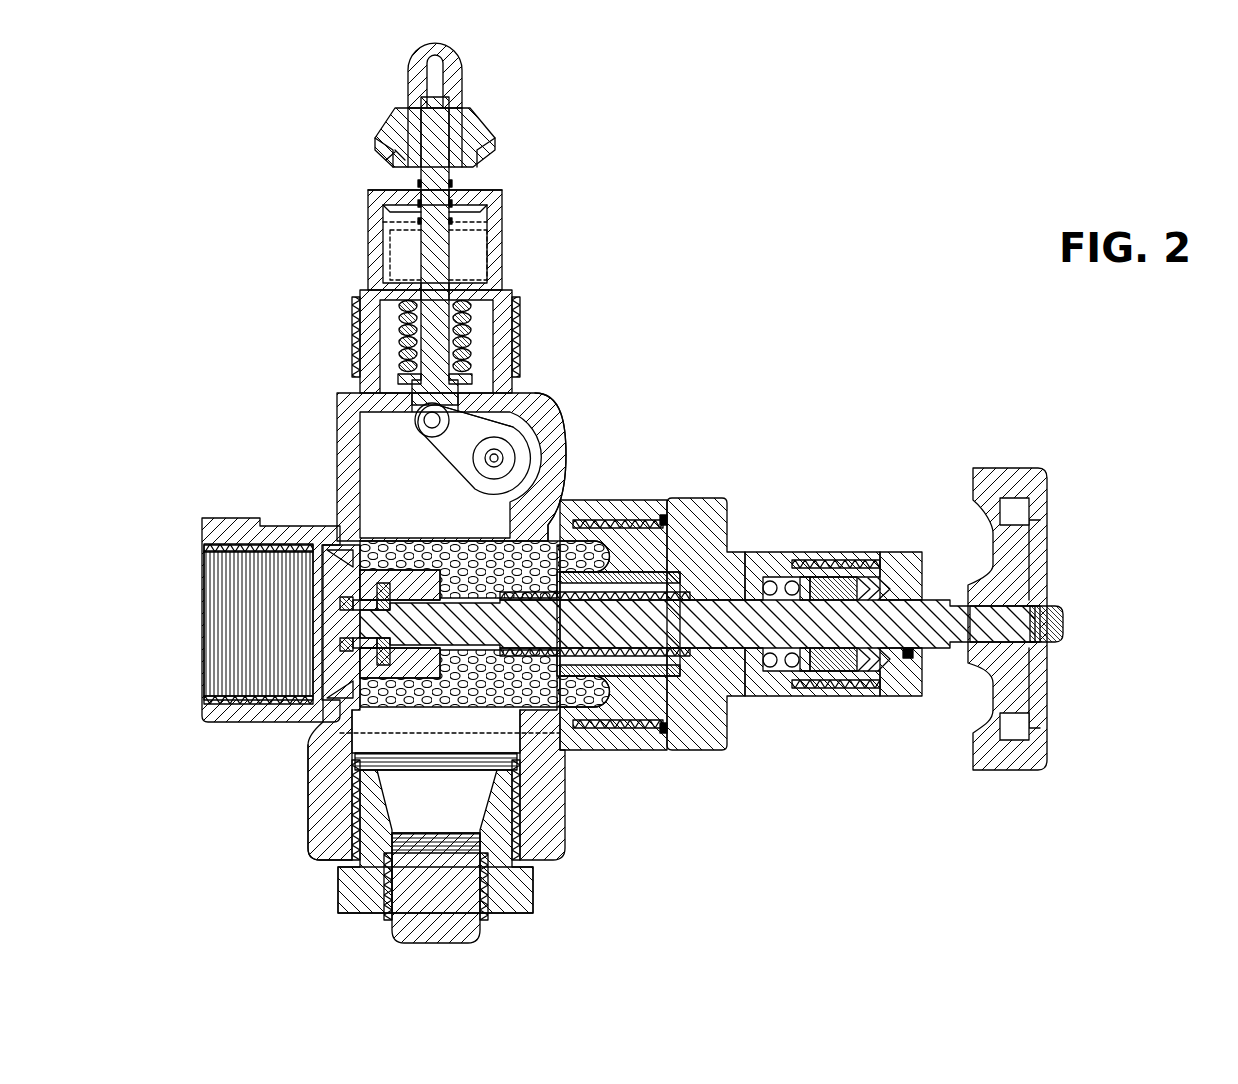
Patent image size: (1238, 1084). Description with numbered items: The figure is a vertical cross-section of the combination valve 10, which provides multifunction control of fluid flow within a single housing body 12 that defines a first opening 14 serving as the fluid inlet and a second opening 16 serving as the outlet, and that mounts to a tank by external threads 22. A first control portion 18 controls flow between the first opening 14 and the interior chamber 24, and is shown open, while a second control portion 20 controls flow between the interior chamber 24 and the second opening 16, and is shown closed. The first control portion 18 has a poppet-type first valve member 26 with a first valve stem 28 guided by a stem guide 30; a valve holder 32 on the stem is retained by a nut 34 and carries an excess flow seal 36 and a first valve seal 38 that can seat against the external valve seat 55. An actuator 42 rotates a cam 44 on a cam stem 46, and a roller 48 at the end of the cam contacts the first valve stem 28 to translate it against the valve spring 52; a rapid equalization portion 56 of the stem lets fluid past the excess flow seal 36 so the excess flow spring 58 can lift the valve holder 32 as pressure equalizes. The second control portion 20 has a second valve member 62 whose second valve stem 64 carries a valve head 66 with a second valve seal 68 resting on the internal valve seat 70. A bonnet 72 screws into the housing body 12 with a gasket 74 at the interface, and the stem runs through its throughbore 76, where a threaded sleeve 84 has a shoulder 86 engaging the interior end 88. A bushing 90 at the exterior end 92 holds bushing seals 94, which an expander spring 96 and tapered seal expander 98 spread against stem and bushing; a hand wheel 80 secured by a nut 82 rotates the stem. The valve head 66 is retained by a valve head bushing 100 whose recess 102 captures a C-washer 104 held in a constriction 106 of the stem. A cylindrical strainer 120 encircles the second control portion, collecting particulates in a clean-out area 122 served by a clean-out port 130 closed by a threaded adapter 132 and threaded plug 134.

The combination valve 10 is at (632, 322).
The housing body 12 is at (553, 472).
The first opening 14 is at (452, 184).
The second opening 16 is at (198, 704).
The first control portion 18 is at (292, 231).
The second control portion 20 is at (872, 832).
The external threads 22 is at (355, 355).
The interior chamber 24 is at (365, 426).
The first valve member 26 is at (514, 141).
The first valve stem 28 is at (385, 270).
The stem guide 30 is at (482, 291).
The valve holder 32 is at (392, 125).
The nut 34 is at (472, 88).
The excess flow seal 36 is at (412, 112).
The first valve seal 38 is at (395, 148).
The actuator 42 is at (497, 403).
The cam 44 is at (462, 465).
The cam stem 46 is at (500, 446).
The roller 48 is at (425, 432).
The valve spring 52 is at (470, 340).
The external valve seat 55 is at (492, 207).
The rapid equalization portion 56 is at (437, 118).
The excess flow spring 58 is at (395, 243).
The second valve member 62 is at (1050, 482).
The second valve stem 64 is at (797, 638).
The valve head 66 is at (370, 667).
The second valve seal 68 is at (323, 683).
The internal valve seat 70 is at (328, 727).
The bonnet 72 is at (722, 500).
The gasket 74 is at (560, 748).
The throughbore 76 is at (738, 692).
The hand wheel 80 is at (1020, 772).
The nut 82 is at (1050, 612).
The threaded sleeve 84 is at (683, 703).
The shoulder 86 is at (583, 518).
The interior end 88 is at (580, 572).
The bushing 90 is at (898, 565).
The exterior end 92 is at (848, 572).
The bushing seals 94 is at (905, 692).
The expander spring 96 is at (792, 582).
The seal expander 98 is at (830, 688).
The valve head bushing 100 is at (405, 573).
The recess 102 is at (395, 562).
The C-washer 104 is at (340, 607).
The constriction 106 is at (372, 647).
The strainer 120 is at (307, 748).
The clean-out area 122 is at (550, 768).
The clean-out port 130 is at (325, 848).
The threaded adapter 132 is at (350, 888).
The threaded plug 134 is at (482, 933).